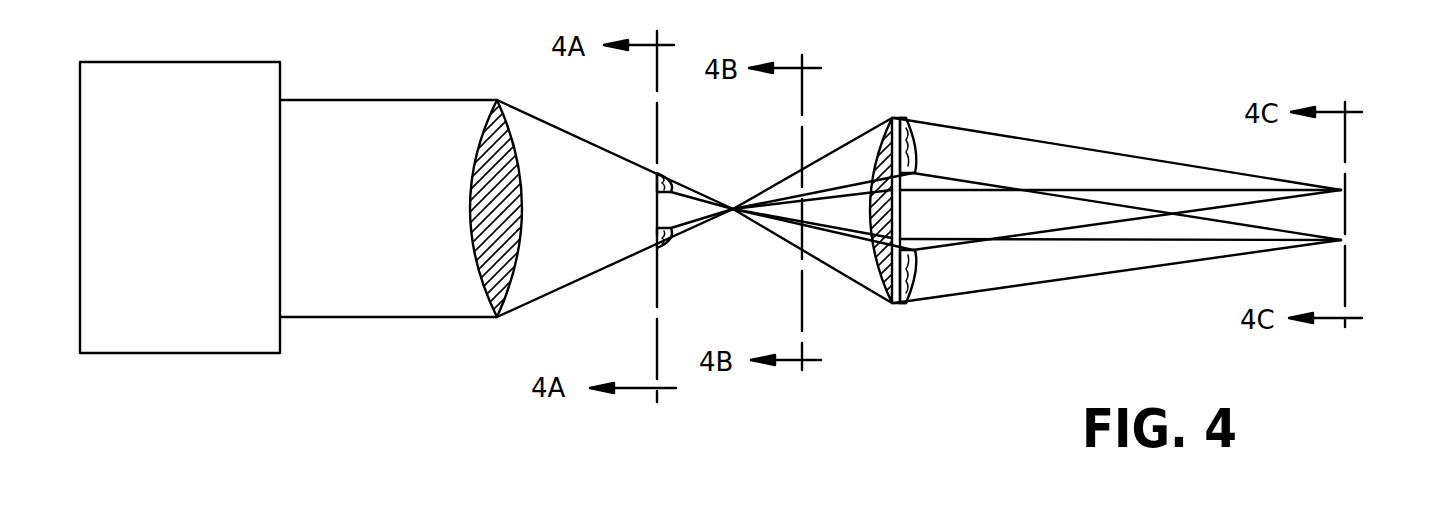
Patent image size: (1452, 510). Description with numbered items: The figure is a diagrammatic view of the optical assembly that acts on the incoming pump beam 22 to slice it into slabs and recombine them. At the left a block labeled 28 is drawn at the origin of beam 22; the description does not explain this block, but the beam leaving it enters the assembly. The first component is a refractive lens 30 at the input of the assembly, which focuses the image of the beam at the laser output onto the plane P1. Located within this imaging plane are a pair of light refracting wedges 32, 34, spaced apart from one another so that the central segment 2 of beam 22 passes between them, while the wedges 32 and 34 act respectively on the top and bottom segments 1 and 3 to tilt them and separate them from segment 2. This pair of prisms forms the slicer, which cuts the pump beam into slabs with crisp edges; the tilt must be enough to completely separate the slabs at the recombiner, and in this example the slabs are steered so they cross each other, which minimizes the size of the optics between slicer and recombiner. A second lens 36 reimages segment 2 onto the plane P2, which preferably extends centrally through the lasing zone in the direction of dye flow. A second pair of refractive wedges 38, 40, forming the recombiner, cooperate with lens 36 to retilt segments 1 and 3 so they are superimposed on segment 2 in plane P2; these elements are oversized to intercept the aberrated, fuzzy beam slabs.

The light source / laser 28 is at (202, 148).
The beam 22 is at (354, 100).
The refractive lens 30 is at (470, 173).
The light refracting wedge 32 is at (656, 180).
The light refracting wedge 34 is at (656, 244).
The second lens 36 is at (877, 281).
The refractive wedge 38 is at (915, 145).
The refractive wedge 40 is at (917, 274).
The segment 1 is at (789, 184).
The segment 2 is at (795, 222).
The segment 3 is at (782, 231).
The imaging plane P1 is at (653, 305).
The final image plane P2 is at (1350, 177).